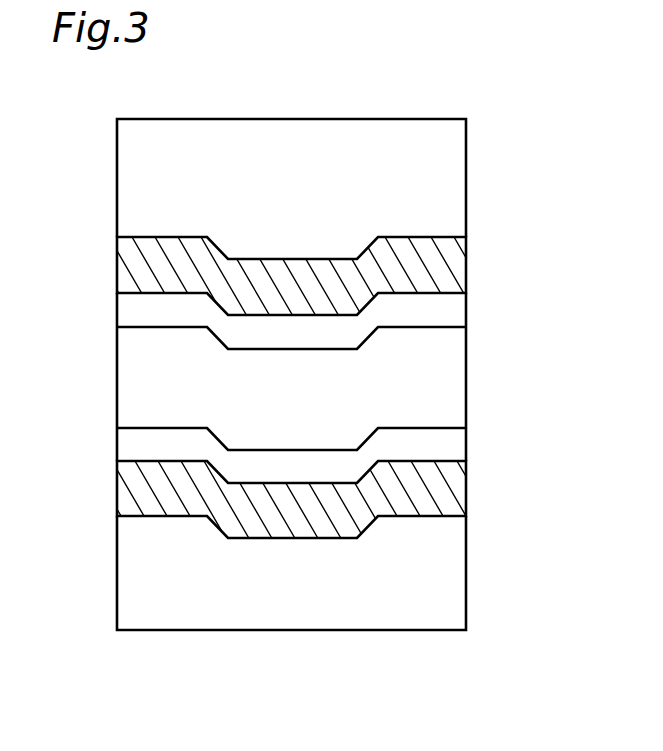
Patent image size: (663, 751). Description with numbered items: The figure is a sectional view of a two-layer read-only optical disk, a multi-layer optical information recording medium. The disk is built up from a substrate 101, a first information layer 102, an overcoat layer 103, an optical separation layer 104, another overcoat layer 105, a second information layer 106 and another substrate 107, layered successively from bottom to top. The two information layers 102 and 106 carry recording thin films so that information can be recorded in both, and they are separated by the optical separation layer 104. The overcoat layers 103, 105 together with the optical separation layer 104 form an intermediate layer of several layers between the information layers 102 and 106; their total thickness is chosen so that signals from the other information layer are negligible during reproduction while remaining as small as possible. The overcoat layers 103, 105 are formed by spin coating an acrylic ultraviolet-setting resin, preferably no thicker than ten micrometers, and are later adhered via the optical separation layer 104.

The substrate 107 is at (463, 178).
The second information layer 106 is at (463, 268).
The overcoat layer 105 is at (463, 312).
The optical separation layer 104 is at (463, 378).
The overcoat layer 103 is at (463, 445).
The first information layer 102 is at (463, 483).
The substrate 101 is at (463, 577).